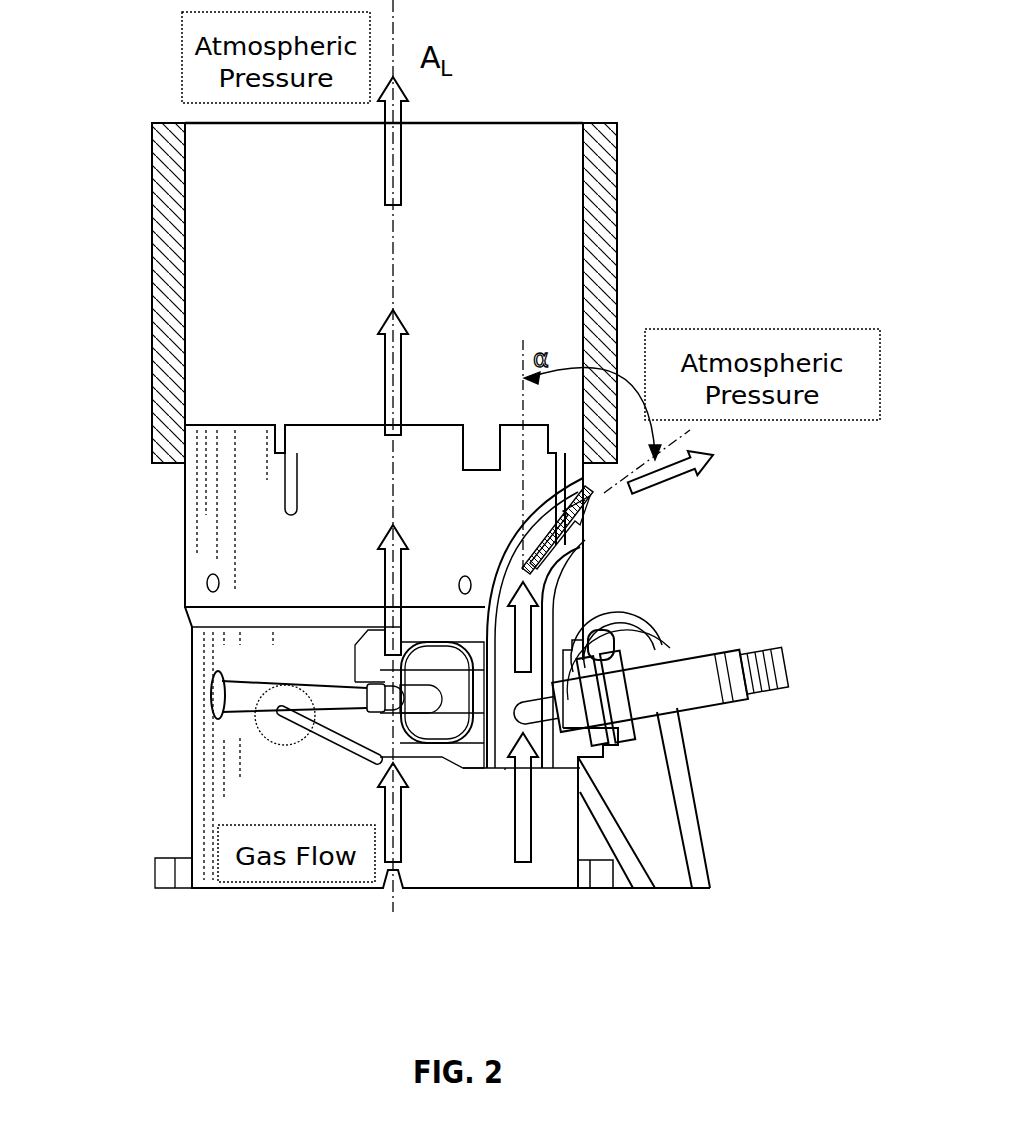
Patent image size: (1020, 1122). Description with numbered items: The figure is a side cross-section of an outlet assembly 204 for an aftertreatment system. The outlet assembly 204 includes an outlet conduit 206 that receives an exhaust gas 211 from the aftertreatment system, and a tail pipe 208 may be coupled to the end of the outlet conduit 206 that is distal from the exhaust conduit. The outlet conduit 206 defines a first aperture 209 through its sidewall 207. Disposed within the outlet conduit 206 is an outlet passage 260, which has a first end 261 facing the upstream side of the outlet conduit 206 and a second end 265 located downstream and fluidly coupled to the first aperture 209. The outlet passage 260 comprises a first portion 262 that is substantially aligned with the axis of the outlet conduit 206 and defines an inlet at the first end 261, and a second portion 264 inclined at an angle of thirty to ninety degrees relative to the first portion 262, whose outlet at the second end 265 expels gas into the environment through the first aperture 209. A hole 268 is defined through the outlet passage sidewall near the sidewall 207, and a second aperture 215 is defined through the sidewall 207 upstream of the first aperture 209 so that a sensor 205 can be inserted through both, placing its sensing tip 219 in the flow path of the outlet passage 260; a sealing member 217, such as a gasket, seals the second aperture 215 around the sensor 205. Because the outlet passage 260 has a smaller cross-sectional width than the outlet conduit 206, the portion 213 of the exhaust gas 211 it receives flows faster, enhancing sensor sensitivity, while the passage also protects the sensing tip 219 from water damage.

The outlet assembly 204 is at (183, 553).
The sensor 205 is at (700, 712).
The outlet conduit 206 is at (190, 636).
The sidewall 207 is at (580, 810).
The tail pipe 208 is at (152, 288).
The first aperture 209 is at (610, 495).
The exhaust gas 211 is at (380, 810).
The portion of the exhaust gas 213 is at (532, 820).
The second aperture 215 is at (618, 620).
The sealing member 217 is at (672, 625).
The sensing tip 219 is at (211, 693).
The outlet passage 260 is at (488, 556).
The first end 261 is at (505, 770).
The first portion 262 is at (400, 670).
The second portion 264 is at (510, 540).
The second end 265 is at (590, 540).
The hole 268 is at (590, 757).